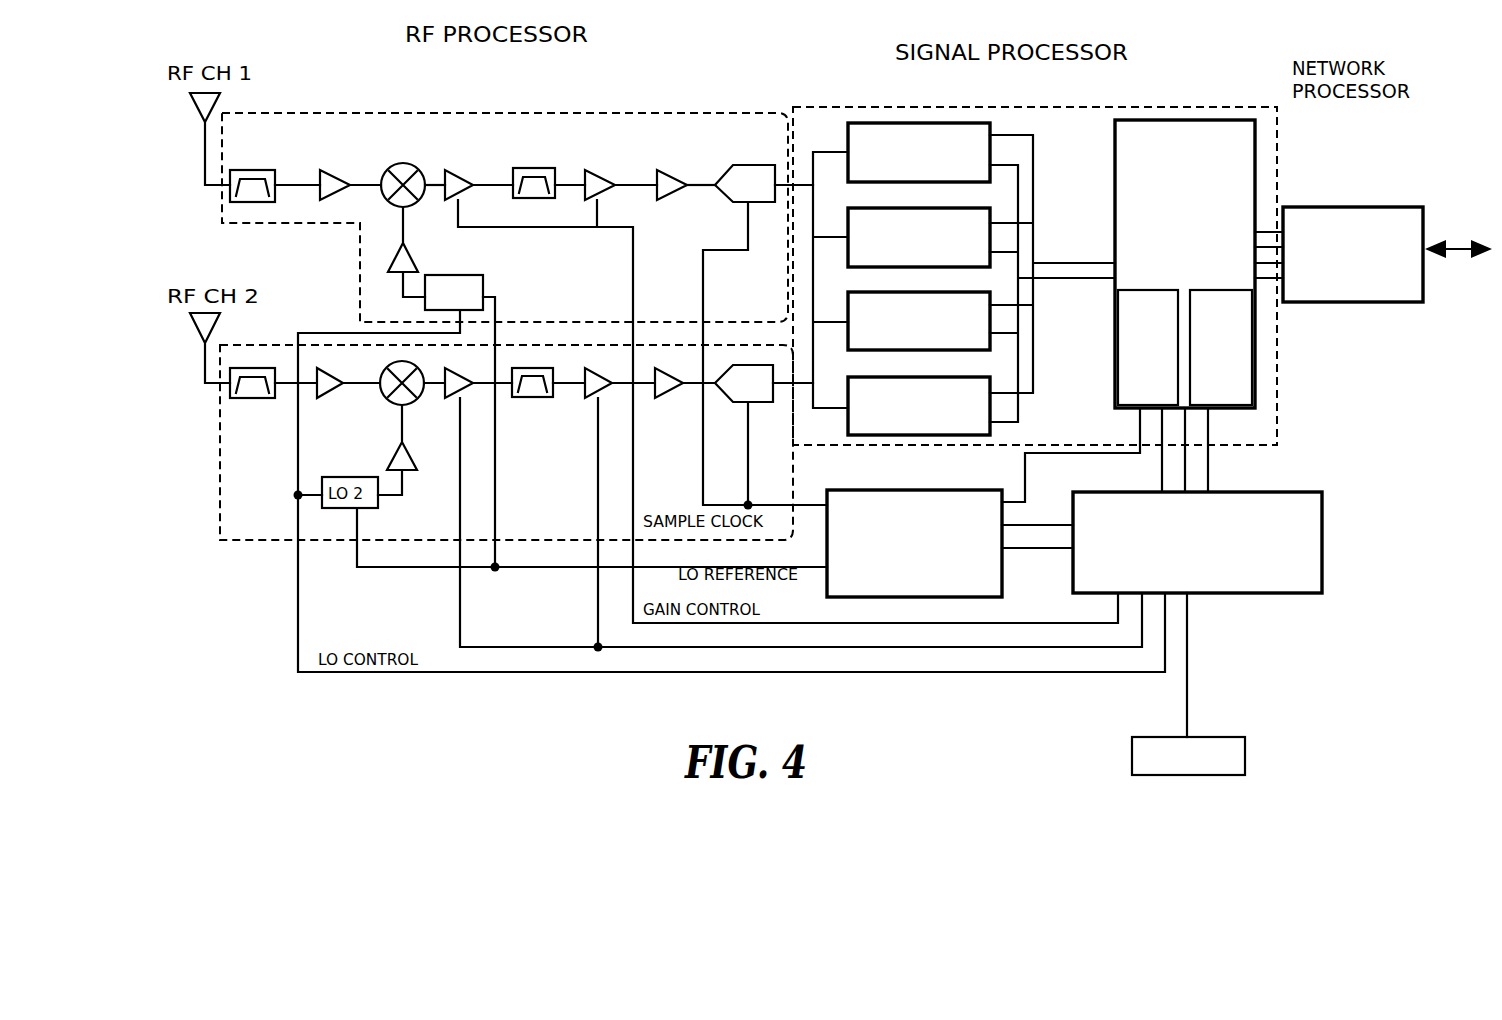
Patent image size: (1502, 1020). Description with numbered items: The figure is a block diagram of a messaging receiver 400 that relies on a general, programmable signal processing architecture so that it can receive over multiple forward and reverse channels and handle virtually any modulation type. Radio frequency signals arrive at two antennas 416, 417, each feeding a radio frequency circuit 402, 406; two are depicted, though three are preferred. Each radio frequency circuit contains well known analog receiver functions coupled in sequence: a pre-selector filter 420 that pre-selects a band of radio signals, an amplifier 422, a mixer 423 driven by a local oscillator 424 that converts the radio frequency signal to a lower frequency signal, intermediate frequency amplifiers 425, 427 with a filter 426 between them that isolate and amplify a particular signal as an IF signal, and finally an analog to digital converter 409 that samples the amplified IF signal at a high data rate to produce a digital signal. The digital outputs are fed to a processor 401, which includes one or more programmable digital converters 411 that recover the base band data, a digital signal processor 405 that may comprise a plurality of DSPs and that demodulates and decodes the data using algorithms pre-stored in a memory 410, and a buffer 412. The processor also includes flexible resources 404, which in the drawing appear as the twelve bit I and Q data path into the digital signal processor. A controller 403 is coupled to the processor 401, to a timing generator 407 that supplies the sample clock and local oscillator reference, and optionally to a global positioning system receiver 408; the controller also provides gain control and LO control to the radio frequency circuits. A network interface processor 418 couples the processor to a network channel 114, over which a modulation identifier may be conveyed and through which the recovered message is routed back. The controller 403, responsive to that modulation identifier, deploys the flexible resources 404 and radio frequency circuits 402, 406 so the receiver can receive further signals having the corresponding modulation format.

The messaging receiver 400 is at (771, 732).
The processor 401 is at (828, 107).
The radio frequency circuit 402 is at (522, 113).
The controller 403 is at (1262, 492).
The flexible resources 404 is at (1067, 200).
The digital signal processor 405 is at (1133, 107).
The radio frequency circuit 406 is at (220, 462).
The timing generator 407 is at (878, 490).
The global positioning system receiver 408 is at (1225, 737).
The analog to digital converter 409 is at (726, 195).
The memory 410 is at (1257, 348).
The digital converters 411 is at (990, 107).
The buffer 412 is at (1138, 290).
The network channel 114 is at (1460, 240).
The antenna 416 is at (217, 112).
The antenna 417 is at (217, 322).
The network interface processor 418 is at (1298, 207).
The pre-selector filter 420 is at (260, 170).
The amplifier 422 is at (328, 170).
The mixer 423 is at (405, 163).
The local oscillator 424 is at (470, 275).
The intermediate frequency amplifier 425 is at (455, 171).
The filter 426 is at (526, 168).
The intermediate frequency amplifier 427 is at (674, 171).